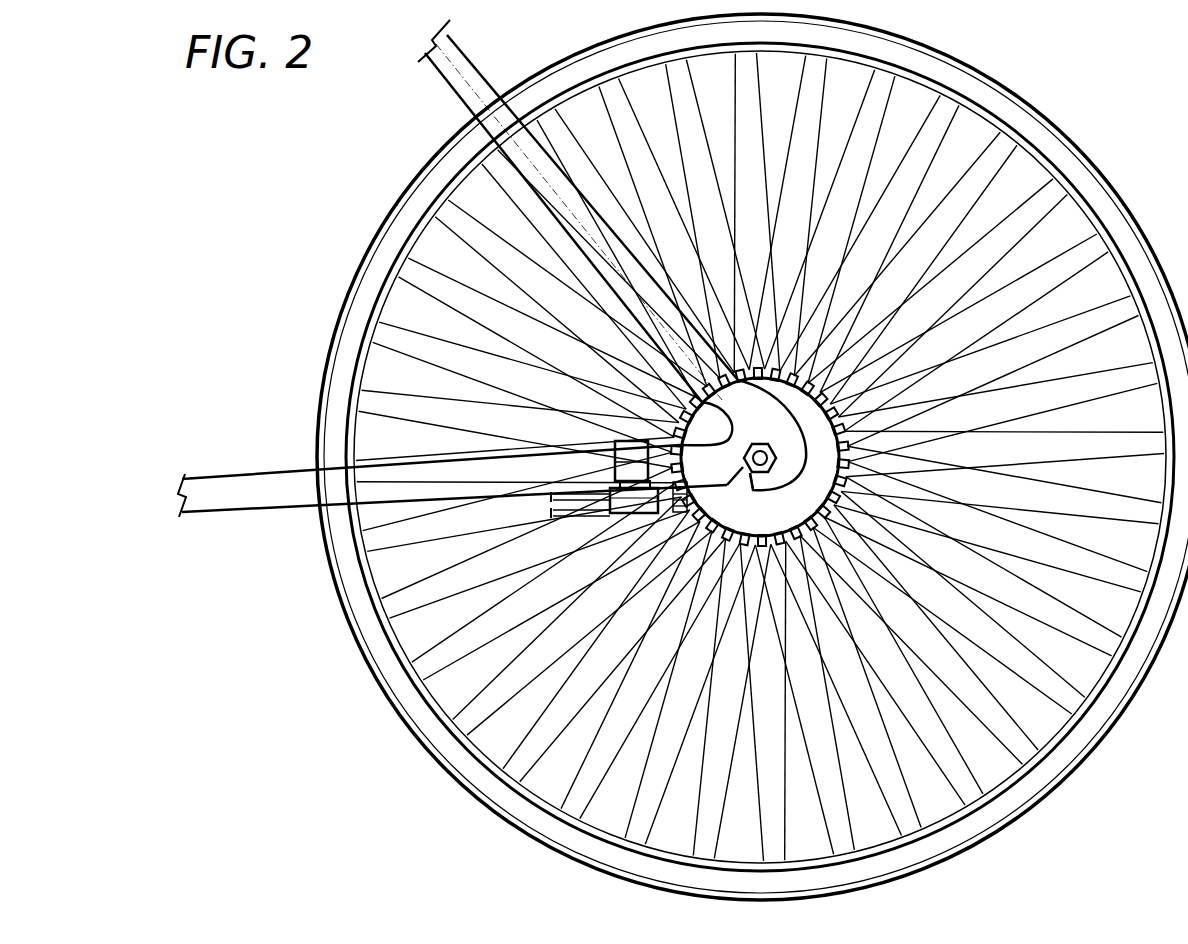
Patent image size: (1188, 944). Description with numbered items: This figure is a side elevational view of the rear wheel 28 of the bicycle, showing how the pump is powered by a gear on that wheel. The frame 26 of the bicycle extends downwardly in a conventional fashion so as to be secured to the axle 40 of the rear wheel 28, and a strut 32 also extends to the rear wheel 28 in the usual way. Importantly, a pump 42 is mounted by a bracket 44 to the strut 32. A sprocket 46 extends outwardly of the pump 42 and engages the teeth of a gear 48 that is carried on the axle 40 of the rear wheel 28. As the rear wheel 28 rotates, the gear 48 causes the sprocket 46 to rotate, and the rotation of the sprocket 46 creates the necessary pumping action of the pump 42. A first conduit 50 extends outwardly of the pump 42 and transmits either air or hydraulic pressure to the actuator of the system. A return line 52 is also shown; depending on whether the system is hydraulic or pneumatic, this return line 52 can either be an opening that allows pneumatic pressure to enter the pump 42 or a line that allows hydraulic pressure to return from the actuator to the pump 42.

The frame 26 is at (435, 72).
The rear wheel 28 is at (1088, 768).
The strut 32 is at (276, 478).
The axle 40 is at (772, 466).
The pump 42 is at (615, 514).
The bracket 44 is at (618, 445).
The sprocket 46 is at (676, 514).
The gear 48 is at (838, 402).
The first conduit 50 is at (555, 492).
The return line 52 is at (556, 516).